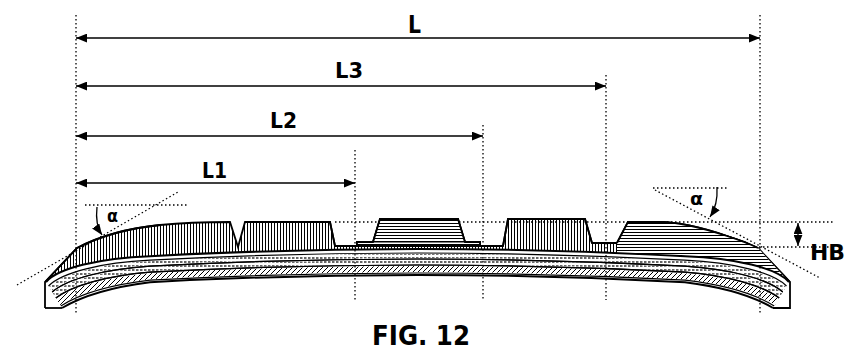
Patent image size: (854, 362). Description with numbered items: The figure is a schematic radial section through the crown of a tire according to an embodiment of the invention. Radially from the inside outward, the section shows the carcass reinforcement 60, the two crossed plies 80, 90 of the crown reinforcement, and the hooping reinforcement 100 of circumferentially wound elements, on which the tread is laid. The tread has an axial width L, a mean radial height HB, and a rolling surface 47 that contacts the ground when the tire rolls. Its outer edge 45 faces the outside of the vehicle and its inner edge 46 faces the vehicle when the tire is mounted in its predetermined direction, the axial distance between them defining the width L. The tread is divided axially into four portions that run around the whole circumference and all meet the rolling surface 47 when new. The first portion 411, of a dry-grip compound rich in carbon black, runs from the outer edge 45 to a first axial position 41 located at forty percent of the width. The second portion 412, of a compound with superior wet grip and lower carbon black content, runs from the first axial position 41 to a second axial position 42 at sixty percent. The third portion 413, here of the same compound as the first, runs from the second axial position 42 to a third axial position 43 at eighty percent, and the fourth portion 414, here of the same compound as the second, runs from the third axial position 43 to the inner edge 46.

The first axial position 41 is at (353, 221).
The second axial position 42 is at (482, 198).
The third axial position 43 is at (603, 174).
The outer edge 45 is at (75, 247).
The inner edge 46 is at (762, 248).
The rolling surface 47 is at (397, 216).
The first portion 411 is at (268, 226).
The second portion 412 is at (430, 242).
The third portion 413 is at (548, 237).
The fourth portion 414 is at (660, 233).
The carcass reinforcement 60 is at (93, 280).
The crown reinforcement ply 80 is at (187, 272).
The crown reinforcement ply 90 is at (240, 270).
The hooping reinforcement 100 is at (297, 270).